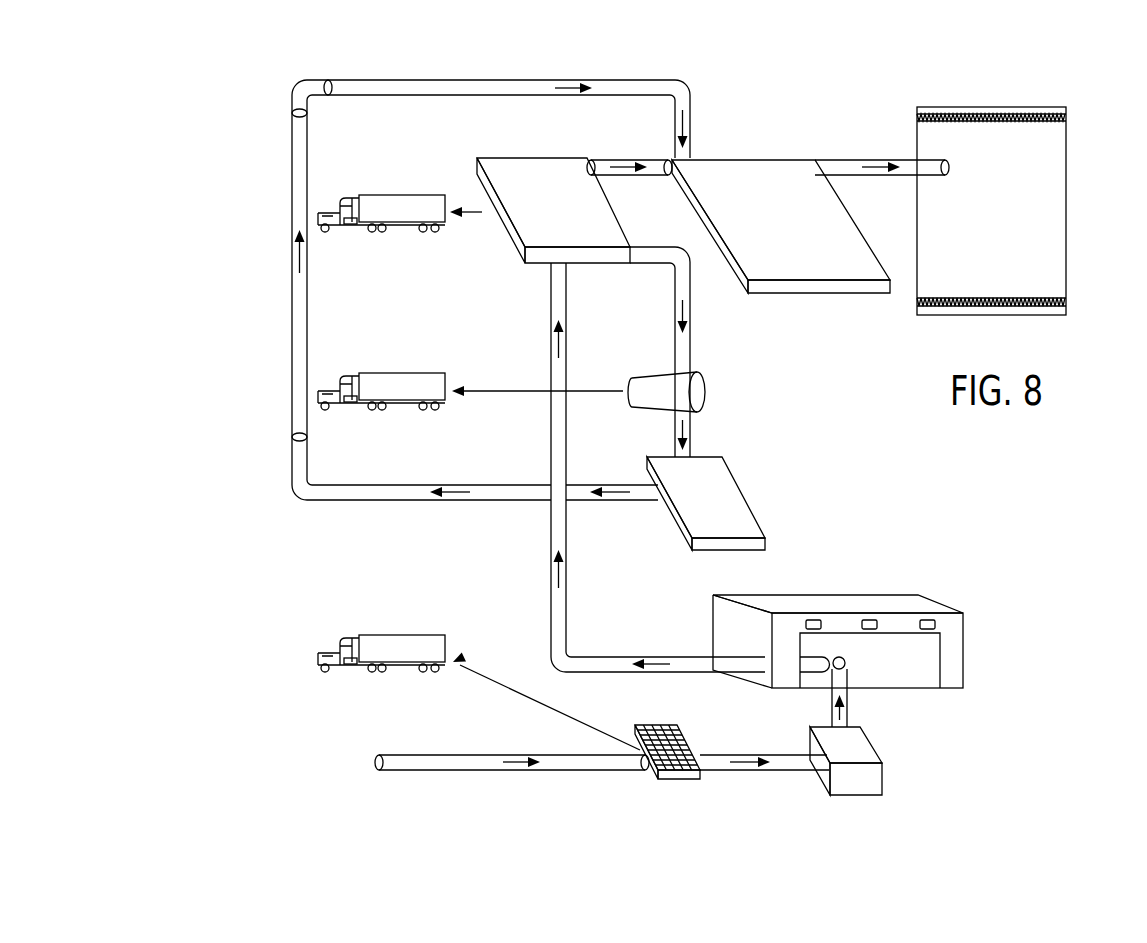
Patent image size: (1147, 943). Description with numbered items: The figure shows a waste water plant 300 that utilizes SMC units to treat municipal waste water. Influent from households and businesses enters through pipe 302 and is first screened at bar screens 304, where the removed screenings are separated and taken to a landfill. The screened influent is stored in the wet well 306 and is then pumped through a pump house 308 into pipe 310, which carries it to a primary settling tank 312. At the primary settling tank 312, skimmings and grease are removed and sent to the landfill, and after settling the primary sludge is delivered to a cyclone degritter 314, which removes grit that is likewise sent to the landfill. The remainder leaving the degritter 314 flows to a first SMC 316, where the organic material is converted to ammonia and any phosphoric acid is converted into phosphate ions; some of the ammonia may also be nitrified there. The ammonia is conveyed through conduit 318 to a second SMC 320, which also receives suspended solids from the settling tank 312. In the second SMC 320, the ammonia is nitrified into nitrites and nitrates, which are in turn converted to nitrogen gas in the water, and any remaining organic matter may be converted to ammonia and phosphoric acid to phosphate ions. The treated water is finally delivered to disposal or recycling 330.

The waste water plant 300 is at (231, 118).
The pipe 302 is at (444, 772).
The bar screens 304 is at (680, 780).
The wet well 306 is at (853, 797).
The pump house 308 is at (965, 632).
The pipe 310 is at (566, 619).
The primary settling tank 312 is at (517, 157).
The cyclone degritter 314 is at (707, 390).
The first SMC 316 is at (757, 512).
The conduit 318 is at (356, 501).
The second SMC 320 is at (748, 158).
The disposal or recycling 330 is at (1068, 257).